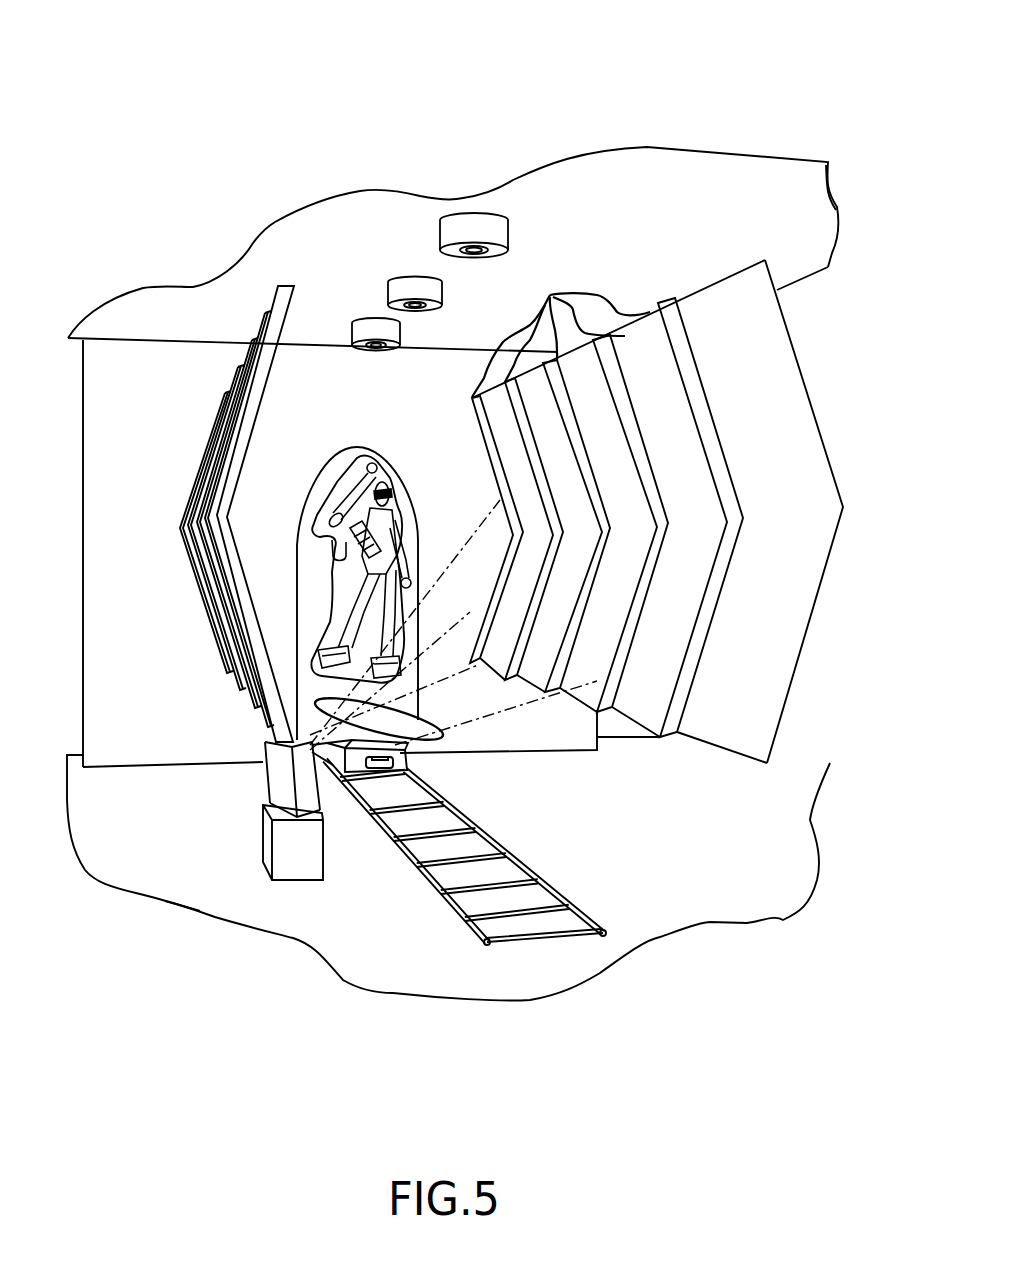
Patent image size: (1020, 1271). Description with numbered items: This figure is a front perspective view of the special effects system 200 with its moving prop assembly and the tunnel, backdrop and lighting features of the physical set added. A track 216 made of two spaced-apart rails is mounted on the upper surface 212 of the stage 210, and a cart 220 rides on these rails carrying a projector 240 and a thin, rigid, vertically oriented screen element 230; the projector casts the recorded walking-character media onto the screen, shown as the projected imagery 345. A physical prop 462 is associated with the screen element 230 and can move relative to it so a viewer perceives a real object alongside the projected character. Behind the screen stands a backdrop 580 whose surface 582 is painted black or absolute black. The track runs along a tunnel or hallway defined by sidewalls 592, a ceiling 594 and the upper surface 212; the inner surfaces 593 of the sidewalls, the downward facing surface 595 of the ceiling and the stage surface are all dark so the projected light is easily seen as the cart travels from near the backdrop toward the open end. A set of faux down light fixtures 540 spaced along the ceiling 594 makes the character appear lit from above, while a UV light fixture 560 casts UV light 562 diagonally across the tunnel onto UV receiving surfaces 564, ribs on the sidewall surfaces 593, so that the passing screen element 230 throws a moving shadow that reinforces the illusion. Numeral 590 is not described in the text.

The special effects system 200 is at (708, 130).
The downward facing surface of the ceiling 595 is at (780, 187).
The ceiling 594 is at (813, 283).
The faux down light fixtures 540 is at (363, 320).
The UV receiving surfaces 564 is at (561, 331).
The backdrop 580 is at (148, 772).
The surface of the backdrop 582 is at (194, 757).
The physical prop 462 is at (305, 487).
The screen element 230 is at (397, 447).
The projected imagery 345 is at (398, 510).
The UV light 562 is at (317, 697).
The UV light fixture 560 is at (293, 857).
The projector 240 is at (425, 757).
The cart 220 is at (428, 775).
The track 216 is at (598, 912).
The right wall 590 is at (782, 768).
The inner surfaces of the sidewalls 593 is at (783, 636).
The sidewalls 592 is at (791, 702).
The stage 210 is at (137, 916).
The upper surface of the stage 212 is at (193, 890).